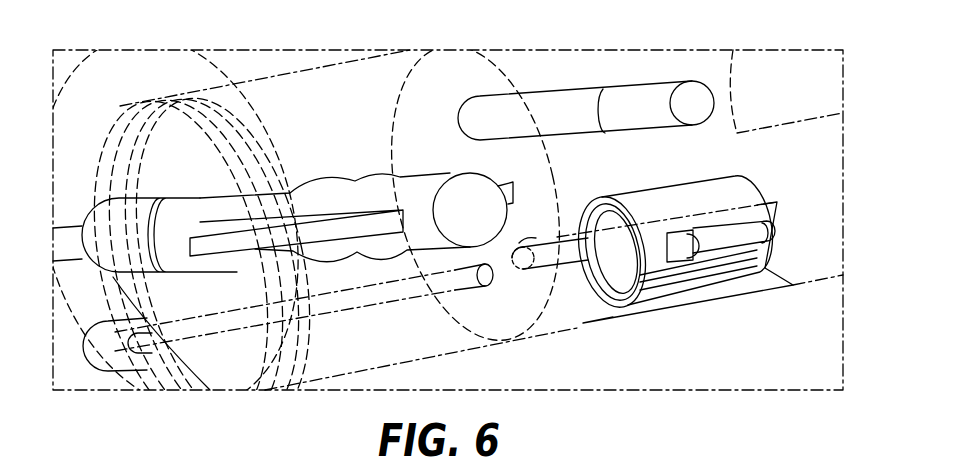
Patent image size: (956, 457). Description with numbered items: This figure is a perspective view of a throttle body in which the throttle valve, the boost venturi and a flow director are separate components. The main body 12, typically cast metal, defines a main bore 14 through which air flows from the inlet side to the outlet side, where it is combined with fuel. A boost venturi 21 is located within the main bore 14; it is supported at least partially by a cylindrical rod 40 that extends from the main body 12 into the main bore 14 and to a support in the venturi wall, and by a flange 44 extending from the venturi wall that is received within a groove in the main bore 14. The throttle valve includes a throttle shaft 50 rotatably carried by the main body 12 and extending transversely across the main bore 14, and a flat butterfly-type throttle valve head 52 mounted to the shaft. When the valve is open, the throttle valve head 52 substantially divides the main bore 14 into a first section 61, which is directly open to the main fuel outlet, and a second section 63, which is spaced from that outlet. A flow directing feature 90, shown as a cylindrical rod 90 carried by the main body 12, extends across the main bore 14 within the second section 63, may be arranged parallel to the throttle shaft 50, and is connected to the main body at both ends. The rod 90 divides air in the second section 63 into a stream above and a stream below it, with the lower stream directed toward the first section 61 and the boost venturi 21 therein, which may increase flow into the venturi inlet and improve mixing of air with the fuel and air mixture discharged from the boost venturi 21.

The main body 12 is at (765, 77).
The main bore 14 is at (175, 155).
The second section 63 is at (200, 165).
The first section 61 is at (228, 328).
The throttle valve head 52 is at (315, 235).
The throttle shaft 50 is at (462, 203).
The flow directing feature 90 is at (562, 98).
The rod 40 is at (553, 260).
The boost venturi 21 is at (713, 193).
The flange 44 is at (683, 247).